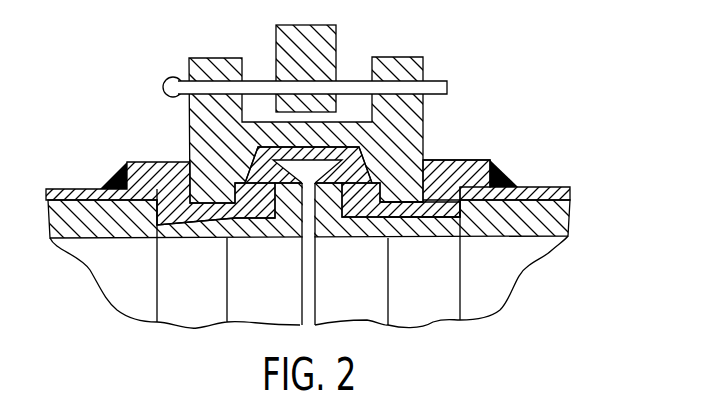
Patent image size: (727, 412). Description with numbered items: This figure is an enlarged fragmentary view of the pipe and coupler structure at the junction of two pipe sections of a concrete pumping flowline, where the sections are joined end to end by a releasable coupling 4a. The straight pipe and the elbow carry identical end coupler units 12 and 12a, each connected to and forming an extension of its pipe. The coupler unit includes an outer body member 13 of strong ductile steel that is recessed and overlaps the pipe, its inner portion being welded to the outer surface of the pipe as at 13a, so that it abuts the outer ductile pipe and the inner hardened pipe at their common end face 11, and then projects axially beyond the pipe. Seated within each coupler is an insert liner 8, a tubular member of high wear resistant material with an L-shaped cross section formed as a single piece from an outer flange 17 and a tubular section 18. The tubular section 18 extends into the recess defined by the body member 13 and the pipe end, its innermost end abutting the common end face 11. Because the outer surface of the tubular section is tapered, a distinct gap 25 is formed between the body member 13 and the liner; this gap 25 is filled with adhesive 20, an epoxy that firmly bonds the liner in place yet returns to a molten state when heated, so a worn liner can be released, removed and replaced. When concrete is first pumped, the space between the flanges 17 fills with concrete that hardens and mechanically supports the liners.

The coupling 4a is at (257, 54).
The insert liner 8 is at (424, 242).
The common end face 11 is at (453, 224).
The end coupler unit 12 is at (478, 152).
The end coupler unit 12a is at (150, 162).
The outer body member 13 is at (443, 162).
The weld 13a is at (507, 163).
The outer flange 17 is at (297, 236).
The tubular section 18 is at (360, 225).
The adhesive 20 is at (442, 222).
The gap 25 is at (530, 236).